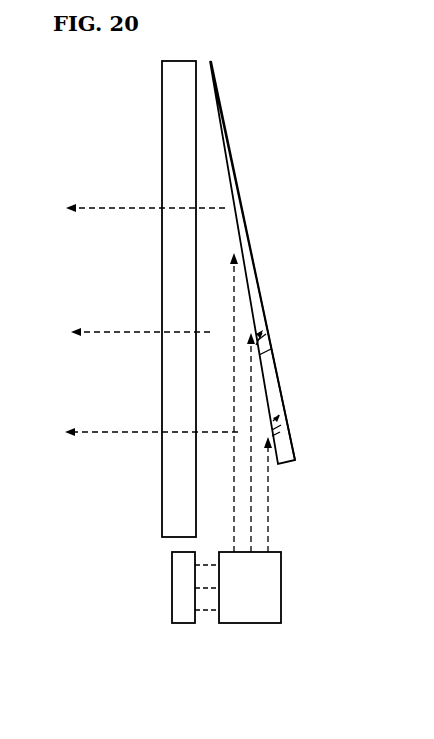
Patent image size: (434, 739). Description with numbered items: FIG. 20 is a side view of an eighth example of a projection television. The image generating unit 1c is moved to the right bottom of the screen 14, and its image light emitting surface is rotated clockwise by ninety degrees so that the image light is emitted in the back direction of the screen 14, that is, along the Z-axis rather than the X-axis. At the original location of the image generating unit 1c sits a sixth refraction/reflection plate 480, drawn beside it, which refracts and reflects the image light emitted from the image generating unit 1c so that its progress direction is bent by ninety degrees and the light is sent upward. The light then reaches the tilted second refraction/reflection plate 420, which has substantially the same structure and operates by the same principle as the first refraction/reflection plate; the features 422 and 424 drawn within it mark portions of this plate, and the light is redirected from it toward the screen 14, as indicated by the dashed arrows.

The screen 14 is at (176, 116).
The second refraction/reflection plate 420 is at (251, 260).
The reflective elements 422 is at (262, 353).
The reflective surface 424 is at (279, 377).
The sixth refraction/reflection plate 480 is at (268, 588).
The image generating unit 1c is at (183, 616).